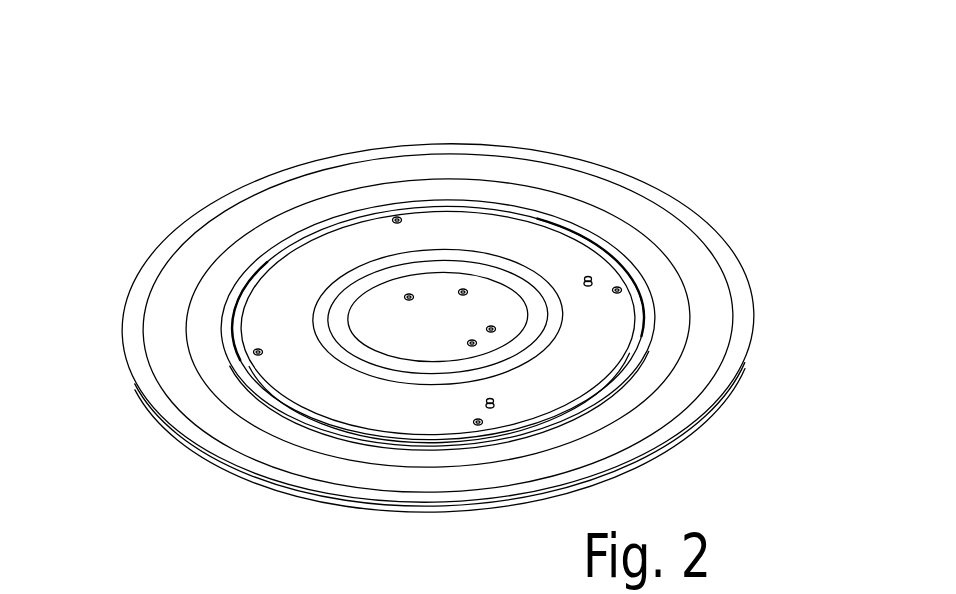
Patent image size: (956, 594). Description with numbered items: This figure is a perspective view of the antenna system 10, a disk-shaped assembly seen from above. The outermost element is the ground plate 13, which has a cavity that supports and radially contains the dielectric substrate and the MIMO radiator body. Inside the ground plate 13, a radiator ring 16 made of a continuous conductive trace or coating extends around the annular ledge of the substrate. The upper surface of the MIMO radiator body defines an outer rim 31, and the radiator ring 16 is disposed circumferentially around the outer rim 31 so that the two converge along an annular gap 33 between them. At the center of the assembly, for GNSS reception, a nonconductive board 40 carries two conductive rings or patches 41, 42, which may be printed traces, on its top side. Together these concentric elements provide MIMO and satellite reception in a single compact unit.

The antenna system 10 is at (166, 200).
The ground plate 13 is at (205, 457).
The radiator ring 16 is at (675, 318).
The outer rim 31 is at (579, 400).
The annular gap 33 is at (650, 310).
The nonconductive board 40 is at (493, 231).
The conductive ring 41 is at (377, 266).
The conductive ring 42 is at (356, 330).